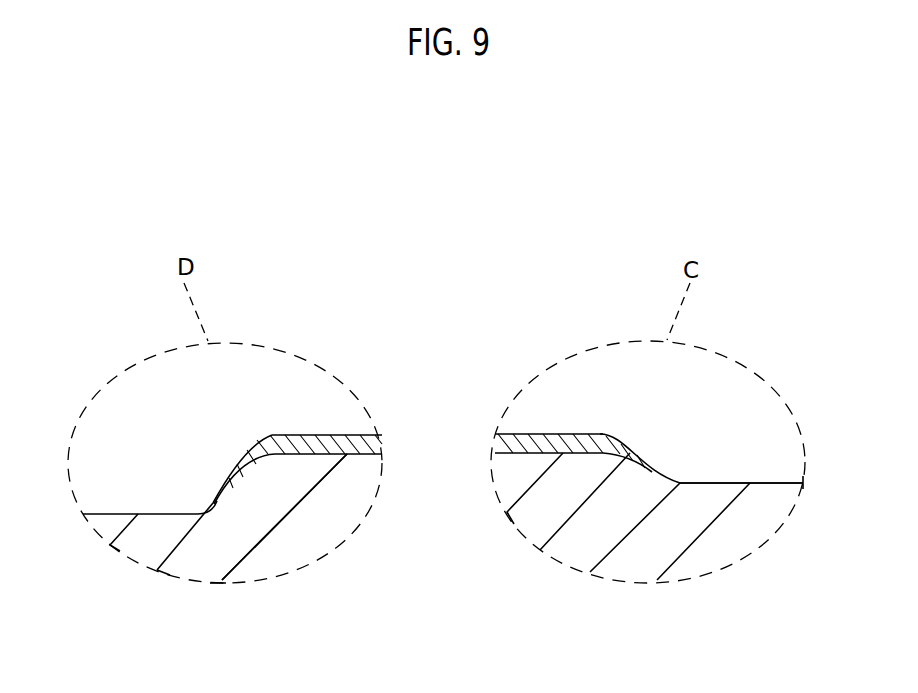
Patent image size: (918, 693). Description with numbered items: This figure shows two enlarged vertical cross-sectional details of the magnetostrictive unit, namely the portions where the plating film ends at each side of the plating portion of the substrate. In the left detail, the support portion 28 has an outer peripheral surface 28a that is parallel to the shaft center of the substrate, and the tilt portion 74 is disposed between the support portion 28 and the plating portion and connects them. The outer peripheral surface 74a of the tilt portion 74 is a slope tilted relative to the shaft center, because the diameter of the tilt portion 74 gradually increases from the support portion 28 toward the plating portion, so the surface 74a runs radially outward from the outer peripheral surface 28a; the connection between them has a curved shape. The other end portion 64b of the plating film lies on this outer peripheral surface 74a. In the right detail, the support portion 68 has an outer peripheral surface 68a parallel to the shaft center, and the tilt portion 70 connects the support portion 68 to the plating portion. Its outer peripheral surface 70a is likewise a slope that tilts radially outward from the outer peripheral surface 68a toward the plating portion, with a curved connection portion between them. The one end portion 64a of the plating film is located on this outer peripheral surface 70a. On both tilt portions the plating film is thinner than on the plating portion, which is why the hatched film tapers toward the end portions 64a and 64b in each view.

The support portion 28 is at (137, 536).
The outer peripheral surface of the support portion 28a is at (130, 513).
The one end portion of the plating film 64a is at (652, 471).
The other end portion of the plating film 64b is at (223, 493).
The support portion 68 is at (752, 537).
The outer peripheral surface of the support portion 68a is at (743, 483).
The tilt portion 70 is at (637, 515).
The outer peripheral surface of the tilt portion 70a is at (642, 462).
The tilt portion 74 is at (245, 517).
The outer peripheral surface of the tilt portion 74a is at (233, 473).